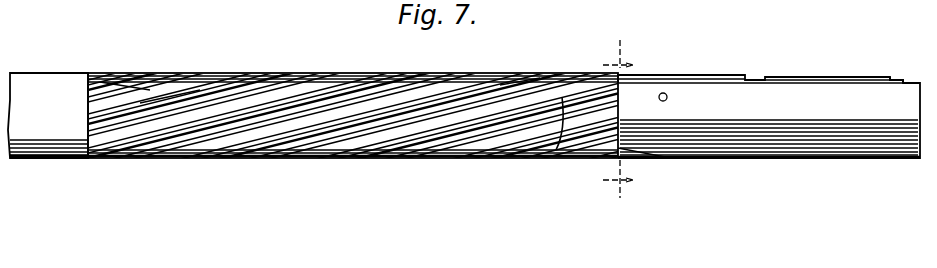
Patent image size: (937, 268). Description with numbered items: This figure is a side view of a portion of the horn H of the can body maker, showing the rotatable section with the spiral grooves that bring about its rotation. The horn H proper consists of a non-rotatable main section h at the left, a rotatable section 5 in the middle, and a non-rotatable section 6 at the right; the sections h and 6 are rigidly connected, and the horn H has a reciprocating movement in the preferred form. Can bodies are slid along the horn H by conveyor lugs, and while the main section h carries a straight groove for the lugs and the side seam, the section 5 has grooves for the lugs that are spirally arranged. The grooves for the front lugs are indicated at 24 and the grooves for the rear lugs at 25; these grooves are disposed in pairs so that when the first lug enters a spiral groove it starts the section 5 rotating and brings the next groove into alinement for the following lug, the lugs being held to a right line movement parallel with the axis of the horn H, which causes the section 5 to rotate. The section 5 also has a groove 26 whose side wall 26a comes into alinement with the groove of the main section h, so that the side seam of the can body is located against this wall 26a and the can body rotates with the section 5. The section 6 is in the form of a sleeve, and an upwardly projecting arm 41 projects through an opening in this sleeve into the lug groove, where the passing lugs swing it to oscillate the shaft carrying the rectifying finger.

The rotatable section 5 is at (444, 110).
The non-rotatable section 6 is at (769, 116).
The spiral grooves 24 is at (556, 150).
The spiral grooves 25 is at (517, 88).
The groove 26 is at (131, 92).
The side wall of the groove 26a is at (162, 101).
The upwardly projecting arm 41 is at (910, 65).
The horn H is at (301, 187).
The non-rotatable main section h is at (451, 115).